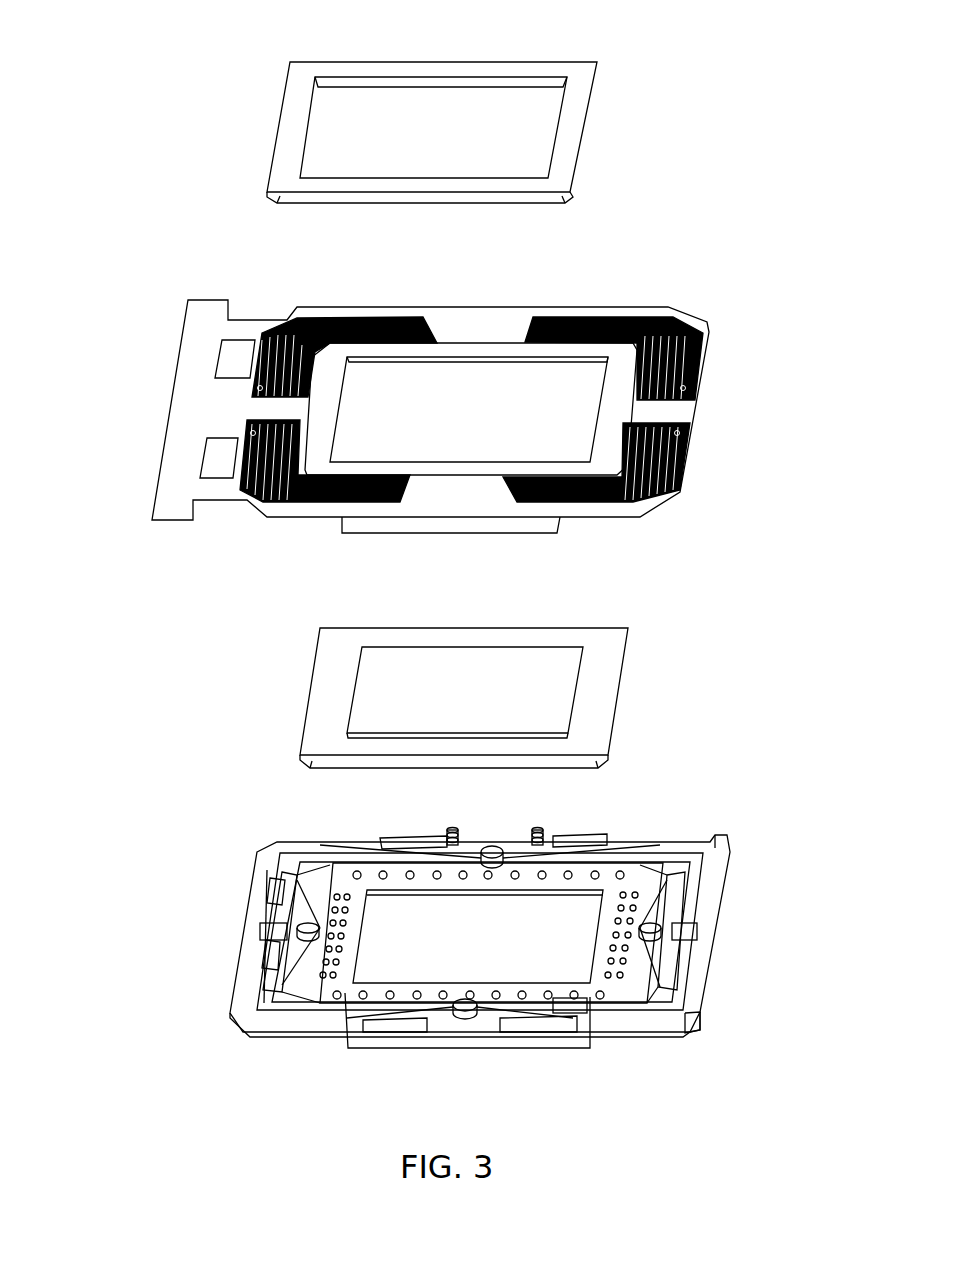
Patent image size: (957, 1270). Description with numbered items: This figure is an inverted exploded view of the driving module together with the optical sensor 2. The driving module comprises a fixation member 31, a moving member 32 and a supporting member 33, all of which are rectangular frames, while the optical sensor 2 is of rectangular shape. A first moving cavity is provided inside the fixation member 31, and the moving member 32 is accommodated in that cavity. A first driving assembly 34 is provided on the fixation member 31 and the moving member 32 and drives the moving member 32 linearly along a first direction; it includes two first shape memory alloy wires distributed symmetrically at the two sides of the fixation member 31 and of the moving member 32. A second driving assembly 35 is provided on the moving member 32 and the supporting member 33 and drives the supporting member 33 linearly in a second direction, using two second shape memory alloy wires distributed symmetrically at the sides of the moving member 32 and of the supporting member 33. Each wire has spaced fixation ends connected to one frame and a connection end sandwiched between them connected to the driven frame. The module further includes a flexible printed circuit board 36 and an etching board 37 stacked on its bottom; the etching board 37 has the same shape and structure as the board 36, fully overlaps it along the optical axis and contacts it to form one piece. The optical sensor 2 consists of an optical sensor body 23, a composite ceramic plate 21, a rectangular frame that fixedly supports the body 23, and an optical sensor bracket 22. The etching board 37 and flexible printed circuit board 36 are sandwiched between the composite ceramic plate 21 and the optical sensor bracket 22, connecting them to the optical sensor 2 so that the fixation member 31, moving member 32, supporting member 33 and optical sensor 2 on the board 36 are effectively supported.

The optical sensor 2 is at (800, 69).
The composite ceramic plate 21 is at (550, 666).
The optical sensor bracket 22 is at (573, 140).
The optical sensor body 23 is at (522, 677).
The fixation member 31 is at (707, 898).
The moving member 32 is at (673, 867).
The supporting member 33 is at (637, 973).
The first driving assembly 34 is at (267, 907).
The second driving assembly 35 is at (530, 1050).
The flexible printed circuit board 36 is at (379, 423).
The etching board 37 is at (180, 477).